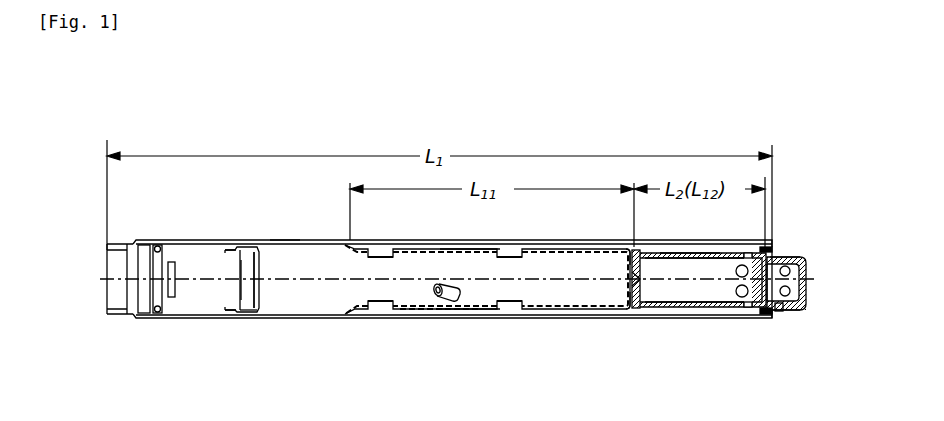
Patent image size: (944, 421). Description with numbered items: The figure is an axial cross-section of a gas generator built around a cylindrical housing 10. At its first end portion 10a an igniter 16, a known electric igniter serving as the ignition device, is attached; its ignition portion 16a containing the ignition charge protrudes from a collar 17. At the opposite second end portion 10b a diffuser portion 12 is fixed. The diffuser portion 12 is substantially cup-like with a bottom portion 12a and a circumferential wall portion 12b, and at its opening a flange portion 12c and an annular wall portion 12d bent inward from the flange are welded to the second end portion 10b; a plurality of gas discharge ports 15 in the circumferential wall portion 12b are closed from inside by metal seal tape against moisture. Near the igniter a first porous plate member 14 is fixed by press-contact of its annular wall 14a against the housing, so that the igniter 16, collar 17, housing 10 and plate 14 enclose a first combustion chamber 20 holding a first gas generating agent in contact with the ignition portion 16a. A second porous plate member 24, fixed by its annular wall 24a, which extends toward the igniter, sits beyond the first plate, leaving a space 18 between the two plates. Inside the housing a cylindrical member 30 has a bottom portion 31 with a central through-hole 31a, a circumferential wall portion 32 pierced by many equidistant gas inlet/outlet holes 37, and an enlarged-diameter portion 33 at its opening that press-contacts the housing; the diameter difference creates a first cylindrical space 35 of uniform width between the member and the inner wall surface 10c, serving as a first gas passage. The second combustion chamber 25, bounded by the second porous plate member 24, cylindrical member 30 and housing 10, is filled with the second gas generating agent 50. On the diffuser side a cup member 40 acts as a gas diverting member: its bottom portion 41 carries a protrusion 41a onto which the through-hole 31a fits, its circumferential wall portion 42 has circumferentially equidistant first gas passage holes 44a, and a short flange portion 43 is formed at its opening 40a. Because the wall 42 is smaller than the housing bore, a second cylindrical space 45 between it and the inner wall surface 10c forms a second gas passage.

The cylindrical housing 10 is at (413, 241).
The first end portion 10a is at (108, 317).
The second end portion 10b is at (768, 318).
The inner wall surface 10c is at (283, 249).
The diffuser portion 12 is at (816, 269).
The bottom portion 12a is at (810, 291).
The circumferential wall portion 12b is at (788, 307).
The flange portion 12c is at (778, 250).
The annular wall portion 12d is at (763, 238).
The first porous plate member 14 is at (229, 271).
The annular wall 14a is at (222, 316).
The gas discharge ports 15 is at (787, 305).
The igniter 16 is at (114, 264).
The ignition portion 16a is at (174, 293).
The collar 17 is at (148, 262).
The space 18 is at (248, 291).
The first combustion chamber 20 is at (215, 277).
The second porous plate member 24 is at (262, 272).
The annular wall 24a is at (243, 314).
The second combustion chamber 25 is at (487, 277).
The cylindrical member 30 is at (556, 242).
The bottom portion 31 is at (633, 250).
The through-hole 31a is at (634, 281).
The circumferential wall portion 32 is at (413, 311).
The enlarged-diameter portion 33 is at (350, 309).
The first cylindrical space 35 is at (507, 309).
The gas inlet/outlet holes 37 is at (473, 248).
The cup member 40 is at (715, 248).
The opening 40a is at (748, 298).
The bottom portion 41 is at (623, 318).
The protrusion 41a is at (633, 278).
The circumferential wall portion 42 is at (663, 313).
The short flange portion 43 is at (763, 327).
The first gas passage holes 44a is at (744, 308).
The second cylindrical space 45 is at (677, 251).
The second gas generating agent 50 is at (462, 292).